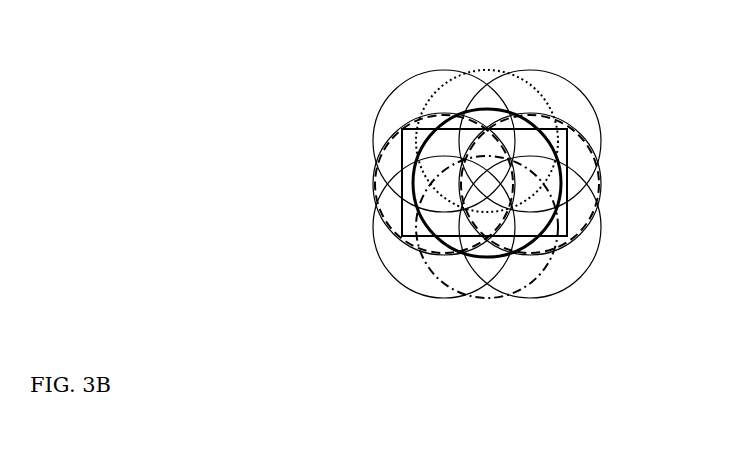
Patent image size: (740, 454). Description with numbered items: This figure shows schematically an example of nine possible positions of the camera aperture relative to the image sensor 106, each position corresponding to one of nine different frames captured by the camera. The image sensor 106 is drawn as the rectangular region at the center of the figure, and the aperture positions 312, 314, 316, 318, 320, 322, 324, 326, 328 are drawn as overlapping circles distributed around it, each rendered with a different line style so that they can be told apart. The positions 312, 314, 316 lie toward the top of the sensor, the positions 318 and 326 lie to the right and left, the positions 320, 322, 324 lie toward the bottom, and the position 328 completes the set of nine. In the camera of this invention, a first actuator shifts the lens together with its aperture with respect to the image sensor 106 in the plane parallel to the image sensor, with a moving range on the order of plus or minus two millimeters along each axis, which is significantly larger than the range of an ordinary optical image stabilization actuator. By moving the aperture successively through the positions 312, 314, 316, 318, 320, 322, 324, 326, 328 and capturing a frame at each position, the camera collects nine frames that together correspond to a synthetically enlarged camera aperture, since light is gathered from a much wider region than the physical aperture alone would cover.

The image sensor 106 is at (487, 183).
The aperture position 312 is at (390, 100).
The aperture position 314 is at (487, 72).
The aperture position 316 is at (577, 98).
The aperture position 318 is at (590, 185).
The aperture position 320 is at (595, 245).
The aperture position 322 is at (478, 272).
The aperture position 324 is at (392, 275).
The aperture position 326 is at (385, 163).
The aperture position 328 is at (400, 132).